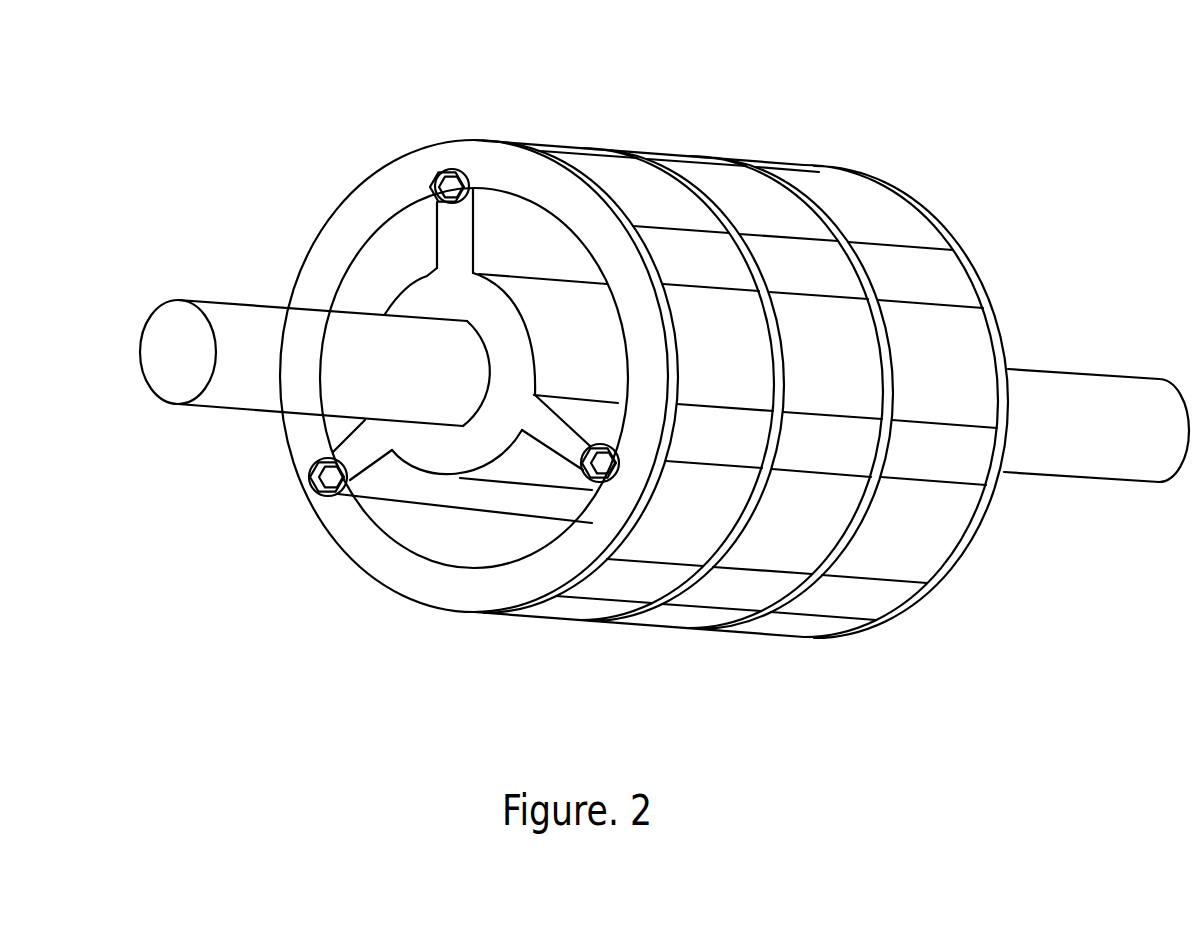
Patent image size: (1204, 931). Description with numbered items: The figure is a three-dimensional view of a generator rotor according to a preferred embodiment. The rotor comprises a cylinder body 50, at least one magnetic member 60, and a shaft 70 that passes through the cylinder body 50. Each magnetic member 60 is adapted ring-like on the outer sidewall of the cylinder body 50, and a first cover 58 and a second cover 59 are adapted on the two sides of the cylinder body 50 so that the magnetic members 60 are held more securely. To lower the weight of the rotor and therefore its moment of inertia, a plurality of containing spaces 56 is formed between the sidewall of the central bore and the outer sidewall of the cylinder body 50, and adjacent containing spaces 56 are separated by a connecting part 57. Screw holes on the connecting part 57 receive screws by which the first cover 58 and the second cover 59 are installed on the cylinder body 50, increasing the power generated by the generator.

The cylinder body 50 is at (662, 78).
The containing spaces 56 is at (380, 282).
The connecting part 57 is at (503, 223).
The first cover 58 is at (343, 532).
The second cover 59 is at (977, 278).
The magnetic member 60 is at (370, 190).
The shaft 70 is at (273, 320).